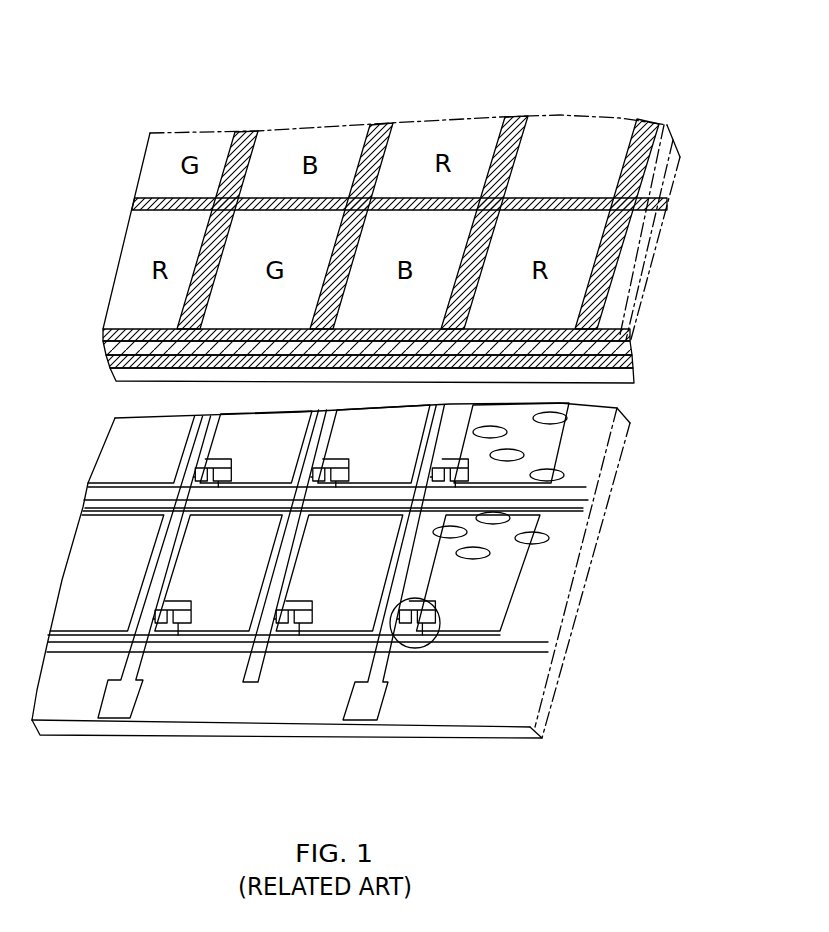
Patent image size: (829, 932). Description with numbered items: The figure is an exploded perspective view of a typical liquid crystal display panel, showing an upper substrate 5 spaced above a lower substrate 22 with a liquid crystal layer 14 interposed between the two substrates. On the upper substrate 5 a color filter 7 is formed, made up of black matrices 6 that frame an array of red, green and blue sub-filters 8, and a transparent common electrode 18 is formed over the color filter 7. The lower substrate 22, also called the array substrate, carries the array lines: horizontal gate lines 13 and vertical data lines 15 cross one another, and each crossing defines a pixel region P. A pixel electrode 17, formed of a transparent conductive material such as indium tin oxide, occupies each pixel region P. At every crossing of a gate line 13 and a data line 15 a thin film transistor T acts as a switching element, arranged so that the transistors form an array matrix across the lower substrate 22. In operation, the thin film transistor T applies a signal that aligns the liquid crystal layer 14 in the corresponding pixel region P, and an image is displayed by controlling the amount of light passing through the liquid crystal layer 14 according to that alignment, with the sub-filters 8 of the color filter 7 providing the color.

The upper substrate 5 is at (103, 347).
The black matrices 6 is at (667, 210).
The color filter 7 is at (545, 106).
The sub-filters 8 is at (570, 128).
The transparent common electrode 18 is at (630, 375).
The gate line 13 is at (512, 648).
The liquid crystal layer 14 is at (545, 474).
The data line 15 is at (362, 673).
The pixel electrode 17 is at (510, 610).
The lower substrate 22 is at (500, 733).
The pixel region P is at (548, 572).
The thin film transistor T is at (417, 650).